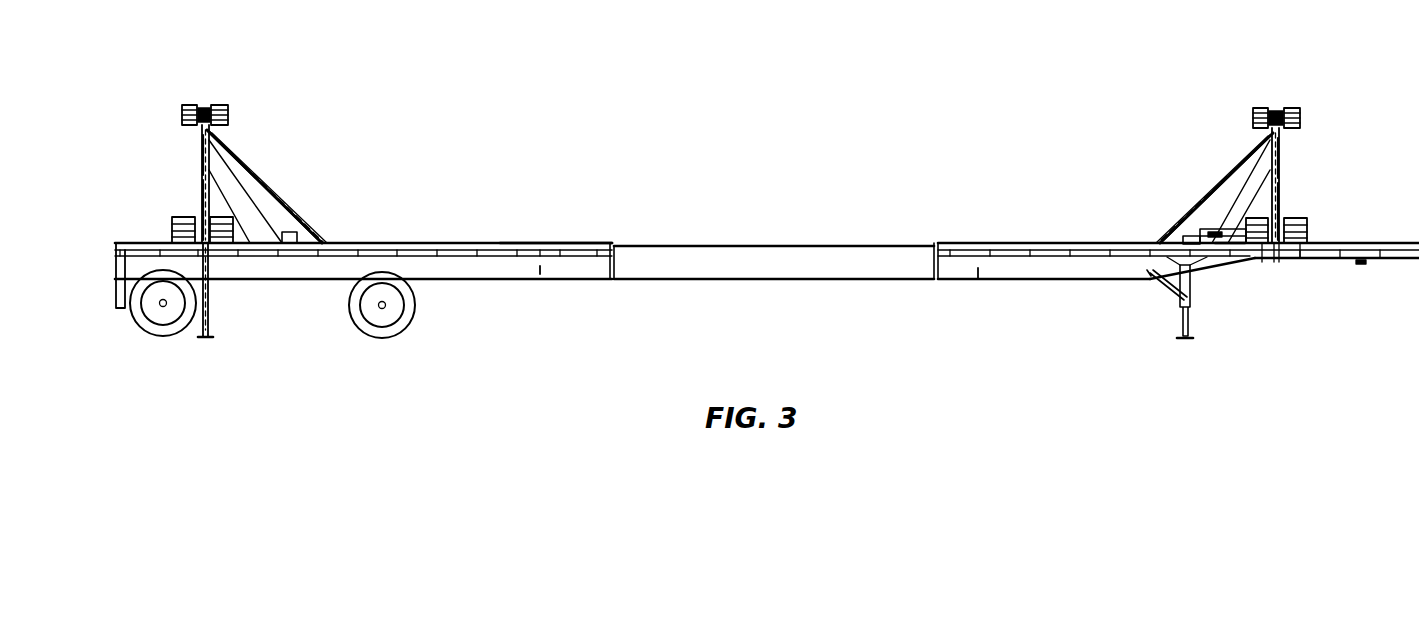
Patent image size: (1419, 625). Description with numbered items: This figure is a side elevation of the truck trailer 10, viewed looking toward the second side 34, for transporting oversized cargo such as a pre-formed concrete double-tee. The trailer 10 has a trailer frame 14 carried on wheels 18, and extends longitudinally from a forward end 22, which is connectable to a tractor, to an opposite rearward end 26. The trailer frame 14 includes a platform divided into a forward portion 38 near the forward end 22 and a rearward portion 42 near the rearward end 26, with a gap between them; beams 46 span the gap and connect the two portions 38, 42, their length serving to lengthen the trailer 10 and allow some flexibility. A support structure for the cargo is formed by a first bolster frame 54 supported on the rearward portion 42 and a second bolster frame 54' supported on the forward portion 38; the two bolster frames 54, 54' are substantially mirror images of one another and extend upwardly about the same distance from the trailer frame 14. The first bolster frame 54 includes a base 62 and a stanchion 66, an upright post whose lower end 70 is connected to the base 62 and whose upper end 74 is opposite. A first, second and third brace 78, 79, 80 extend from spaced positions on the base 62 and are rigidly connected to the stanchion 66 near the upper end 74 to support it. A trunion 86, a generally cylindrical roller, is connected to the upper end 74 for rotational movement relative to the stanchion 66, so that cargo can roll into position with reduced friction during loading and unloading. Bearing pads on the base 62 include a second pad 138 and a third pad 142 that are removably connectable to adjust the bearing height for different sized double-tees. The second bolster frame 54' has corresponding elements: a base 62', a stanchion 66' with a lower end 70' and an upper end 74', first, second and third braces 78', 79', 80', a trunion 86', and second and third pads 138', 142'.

The truck trailer 10 is at (958, 77).
The trailer frame 14 is at (556, 242).
The wheels 18 is at (168, 327).
The forward end 22 is at (1418, 281).
The rearward end 26 is at (113, 242).
The second side 34 is at (507, 252).
The forward portion 38 is at (1000, 242).
The rearward portion 42 is at (433, 242).
The beams 46 is at (717, 243).
The first bolster frame 54 is at (267, 183).
The base 62 is at (288, 286).
The stanchion 66 is at (179, 175).
The lower end 70 is at (179, 192).
The upper end 74 is at (224, 99).
The first brace 78 is at (270, 186).
The second brace 79 is at (280, 187).
The third brace 80 is at (161, 149).
The trunion 86 is at (174, 96).
The second pad 138 is at (249, 205).
The third pad 142 is at (259, 314).
The second bolster frame 54' is at (1214, 185).
The base 62' is at (1251, 292).
The stanchion 66' is at (1313, 195).
The lower end 70' is at (1317, 211).
The upper end 74' is at (1298, 99).
The first brace 78' is at (1199, 188).
The second brace 79' is at (1218, 191).
The third brace 80' is at (1321, 150).
The trunion 86' is at (1234, 103).
The second pad 138' is at (1237, 223).
The third pad 142' is at (1315, 285).